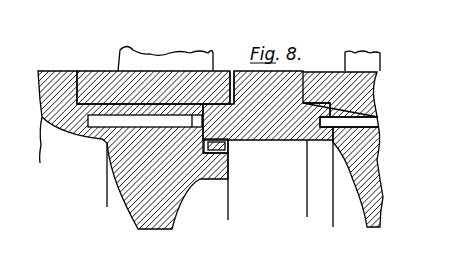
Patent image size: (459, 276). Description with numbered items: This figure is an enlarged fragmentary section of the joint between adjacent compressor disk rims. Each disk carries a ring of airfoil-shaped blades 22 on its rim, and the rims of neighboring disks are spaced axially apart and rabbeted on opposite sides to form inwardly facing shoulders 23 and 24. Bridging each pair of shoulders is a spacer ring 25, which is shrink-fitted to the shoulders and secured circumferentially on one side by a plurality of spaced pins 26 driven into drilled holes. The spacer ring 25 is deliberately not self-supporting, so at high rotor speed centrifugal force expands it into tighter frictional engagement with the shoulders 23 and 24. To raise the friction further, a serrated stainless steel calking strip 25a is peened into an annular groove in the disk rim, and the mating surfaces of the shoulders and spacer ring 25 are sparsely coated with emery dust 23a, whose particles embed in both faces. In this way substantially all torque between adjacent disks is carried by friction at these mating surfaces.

The blades 22 is at (138, 53).
The inwardly facing shoulder 23 is at (92, 80).
The emery dust 23a is at (245, 142).
The inwardly facing shoulder 24 is at (229, 70).
The spacer ring 25 is at (262, 143).
The calking strip 25a is at (238, 146).
The pins 26 is at (101, 128).